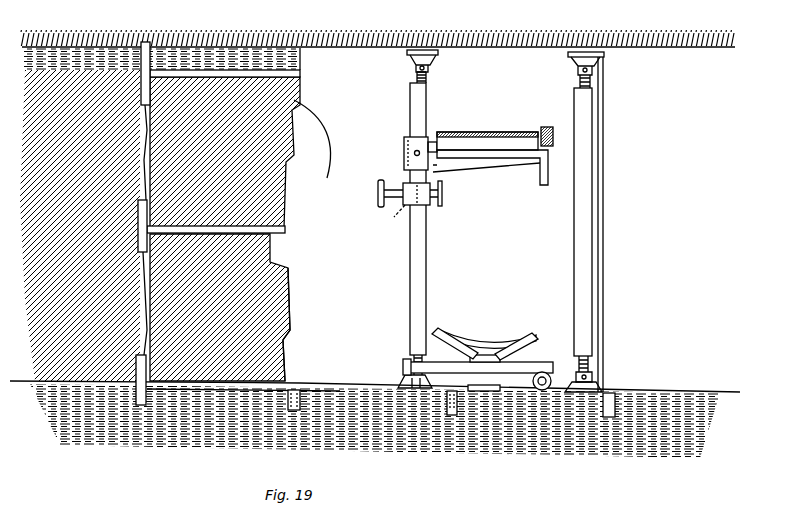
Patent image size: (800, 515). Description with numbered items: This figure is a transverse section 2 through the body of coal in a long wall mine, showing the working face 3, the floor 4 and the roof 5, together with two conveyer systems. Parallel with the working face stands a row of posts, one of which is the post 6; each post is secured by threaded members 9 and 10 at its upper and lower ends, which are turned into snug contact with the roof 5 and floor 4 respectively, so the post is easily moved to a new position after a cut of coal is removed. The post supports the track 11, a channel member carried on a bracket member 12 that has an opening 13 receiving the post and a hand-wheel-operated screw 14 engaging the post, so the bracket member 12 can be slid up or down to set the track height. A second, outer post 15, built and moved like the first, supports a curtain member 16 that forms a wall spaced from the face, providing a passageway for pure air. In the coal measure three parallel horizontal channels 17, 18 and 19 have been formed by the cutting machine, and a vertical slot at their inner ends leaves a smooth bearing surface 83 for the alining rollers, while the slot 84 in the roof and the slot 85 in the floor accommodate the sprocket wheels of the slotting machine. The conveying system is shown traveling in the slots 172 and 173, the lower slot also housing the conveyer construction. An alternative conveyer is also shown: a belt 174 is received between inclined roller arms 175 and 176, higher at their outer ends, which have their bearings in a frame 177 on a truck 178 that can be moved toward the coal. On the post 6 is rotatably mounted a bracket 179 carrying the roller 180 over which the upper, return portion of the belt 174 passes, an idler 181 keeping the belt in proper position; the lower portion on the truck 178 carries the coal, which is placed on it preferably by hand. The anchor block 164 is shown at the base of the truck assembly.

The transverse section 2 is at (80, 225).
The working face 3 is at (290, 168).
The floor 4 is at (633, 394).
The roof 5 is at (352, 48).
The post 6 is at (410, 259).
The threaded member 9 is at (440, 57).
The threaded member 10 is at (400, 379).
The track 11 is at (378, 193).
The bracket member 12 is at (429, 202).
The opening 13 is at (390, 220).
The hand-wheel-operated screw 14 is at (443, 193).
The post 15 is at (574, 223).
The curtain member 16 is at (603, 223).
The channel 17 is at (286, 80).
The channel 18 is at (285, 231).
The channel 19 is at (192, 380).
The smooth bearing surface 83 is at (289, 368).
The slot 84 is at (146, 42).
The slot 85 is at (139, 400).
The base plate 164 is at (458, 412).
The slot 172 is at (290, 406).
The slot 173 is at (450, 416).
The belt 174 is at (488, 128).
The roller arm 175 is at (442, 336).
The roller arm 176 is at (526, 340).
The frame 177 is at (530, 351).
The truck 178 is at (478, 368).
The arm 179 is at (487, 163).
The roller 180 is at (518, 152).
The idler 181 is at (547, 127).